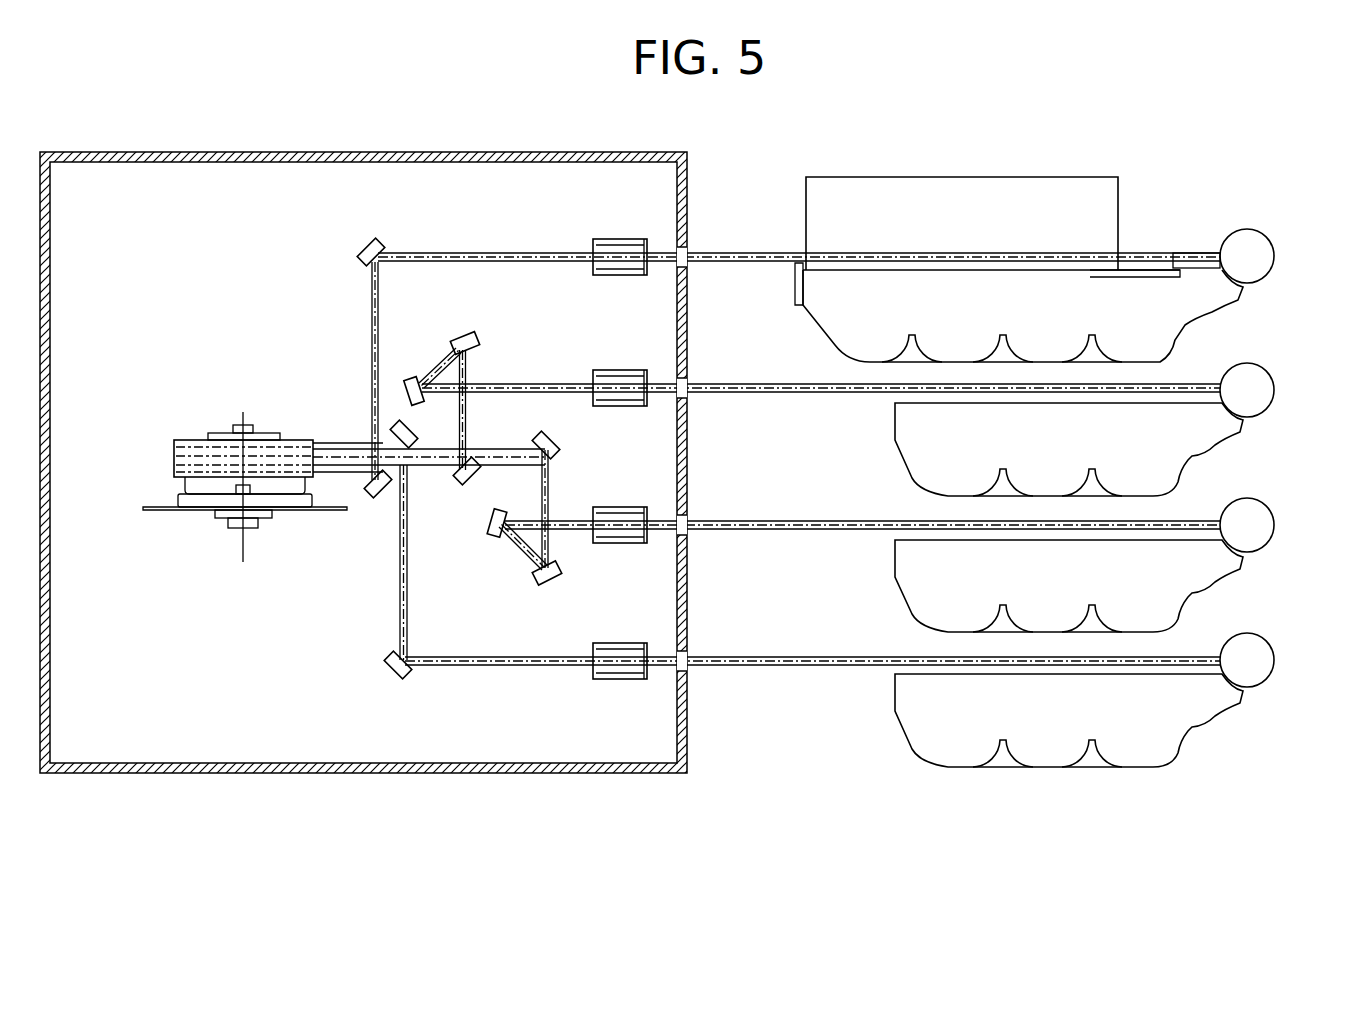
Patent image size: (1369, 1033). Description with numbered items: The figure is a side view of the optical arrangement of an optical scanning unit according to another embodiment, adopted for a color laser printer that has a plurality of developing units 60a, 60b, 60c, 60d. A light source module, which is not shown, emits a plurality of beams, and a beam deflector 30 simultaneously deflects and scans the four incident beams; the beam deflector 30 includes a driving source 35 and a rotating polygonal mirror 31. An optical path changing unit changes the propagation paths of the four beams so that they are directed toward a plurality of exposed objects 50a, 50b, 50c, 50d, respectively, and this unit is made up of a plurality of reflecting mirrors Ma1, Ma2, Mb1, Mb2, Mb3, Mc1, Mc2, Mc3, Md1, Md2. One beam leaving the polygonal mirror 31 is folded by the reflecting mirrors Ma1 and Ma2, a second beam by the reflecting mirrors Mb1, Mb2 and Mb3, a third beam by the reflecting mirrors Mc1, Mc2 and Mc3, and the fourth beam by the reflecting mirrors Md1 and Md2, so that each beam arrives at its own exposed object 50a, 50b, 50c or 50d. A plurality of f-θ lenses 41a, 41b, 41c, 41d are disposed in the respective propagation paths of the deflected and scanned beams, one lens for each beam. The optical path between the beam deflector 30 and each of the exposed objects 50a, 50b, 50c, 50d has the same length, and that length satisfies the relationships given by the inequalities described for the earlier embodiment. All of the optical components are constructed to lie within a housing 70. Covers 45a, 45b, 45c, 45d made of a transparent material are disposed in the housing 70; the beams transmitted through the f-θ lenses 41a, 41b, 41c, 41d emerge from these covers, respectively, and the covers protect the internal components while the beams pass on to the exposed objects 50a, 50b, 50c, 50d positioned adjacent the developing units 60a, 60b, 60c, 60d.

The beam deflector 30 is at (223, 490).
The rotating polygonal mirror 31 is at (175, 444).
The driving source 35 is at (197, 490).
The f-θ lens 41a is at (618, 239).
The f-θ lens 41b is at (618, 370).
The f-θ lens 41c is at (618, 507).
The f-θ lens 41d is at (618, 643).
The cover 45a is at (683, 237).
The cover 45b is at (683, 370).
The cover 45c is at (683, 506).
The cover 45d is at (683, 640).
The exposed object 50a is at (1268, 258).
The exposed object 50b is at (1268, 391).
The exposed object 50c is at (1268, 526).
The exposed object 50d is at (1268, 661).
The developing unit 60a is at (1228, 324).
The developing unit 60b is at (1228, 458).
The developing unit 60c is at (1228, 592).
The developing unit 60d is at (1228, 728).
The housing 70 is at (365, 775).
The reflecting mirror Ma1 is at (376, 497).
The reflecting mirror Ma2 is at (366, 245).
The reflecting mirror Mb1 is at (461, 487).
The reflecting mirror Mb2 is at (472, 334).
The reflecting mirror Mb3 is at (413, 378).
The reflecting mirror Mc1 is at (536, 436).
The reflecting mirror Mc2 is at (546, 588).
The reflecting mirror Mc3 is at (491, 539).
The reflecting mirror Md1 is at (395, 425).
The reflecting mirror Md2 is at (392, 676).